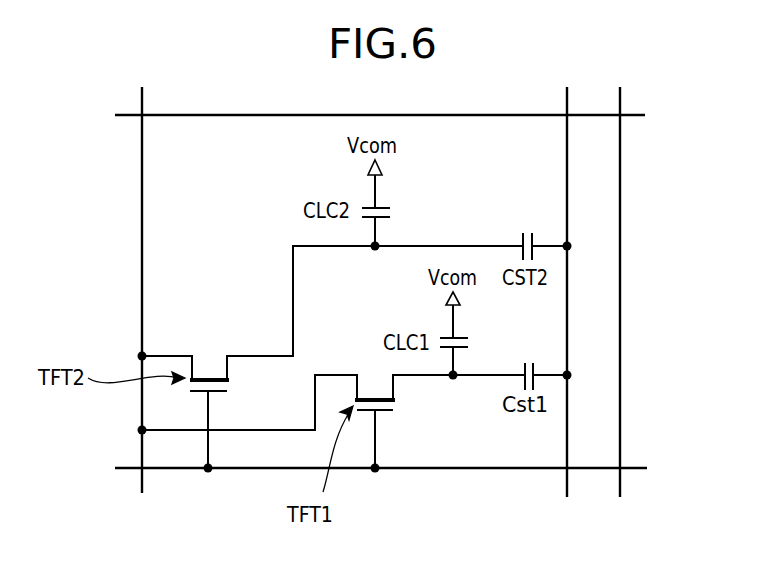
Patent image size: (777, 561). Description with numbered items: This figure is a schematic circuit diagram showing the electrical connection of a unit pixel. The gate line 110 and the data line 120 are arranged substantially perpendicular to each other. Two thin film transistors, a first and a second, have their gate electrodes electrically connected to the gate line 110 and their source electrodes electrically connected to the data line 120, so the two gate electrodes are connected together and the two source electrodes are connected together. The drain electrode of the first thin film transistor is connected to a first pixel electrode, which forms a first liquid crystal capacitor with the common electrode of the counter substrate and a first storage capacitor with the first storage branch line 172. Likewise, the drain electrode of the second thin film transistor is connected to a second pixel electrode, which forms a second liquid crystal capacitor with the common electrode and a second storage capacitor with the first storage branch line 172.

The gate line 110 is at (448, 470).
The data line 120 is at (142, 218).
The first storage branch line 172 is at (567, 163).